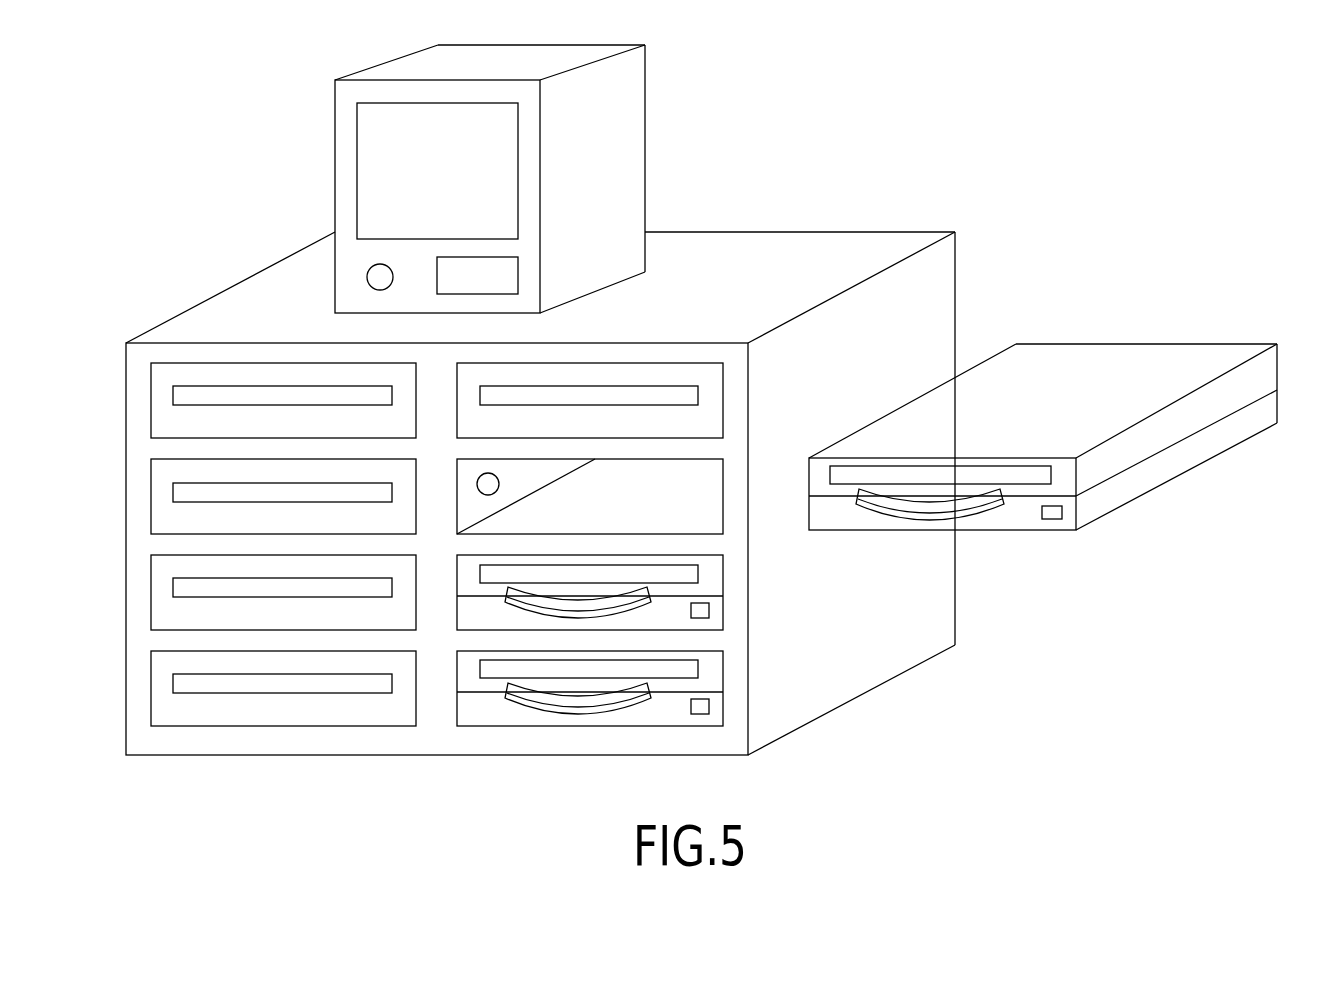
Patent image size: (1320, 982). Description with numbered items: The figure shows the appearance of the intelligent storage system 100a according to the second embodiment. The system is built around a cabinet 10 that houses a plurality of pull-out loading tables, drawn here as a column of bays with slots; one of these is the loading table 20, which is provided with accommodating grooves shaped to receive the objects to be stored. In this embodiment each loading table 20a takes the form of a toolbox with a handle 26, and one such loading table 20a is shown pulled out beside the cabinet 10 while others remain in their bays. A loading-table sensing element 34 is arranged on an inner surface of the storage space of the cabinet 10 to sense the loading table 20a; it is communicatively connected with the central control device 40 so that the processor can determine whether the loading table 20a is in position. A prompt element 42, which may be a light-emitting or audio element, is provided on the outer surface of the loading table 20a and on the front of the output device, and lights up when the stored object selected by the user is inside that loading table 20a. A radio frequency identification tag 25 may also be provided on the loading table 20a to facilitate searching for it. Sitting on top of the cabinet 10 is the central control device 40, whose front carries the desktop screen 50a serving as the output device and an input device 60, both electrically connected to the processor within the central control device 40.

The intelligent storage system 100a is at (850, 37).
The cabinet 10 is at (857, 247).
The loading table 20 is at (710, 381).
The loading table 20a is at (1130, 369).
The radio frequency identification (RFID) tag 25 is at (705, 618).
The handle 26 is at (924, 514).
The loading-table sensing element 34 is at (499, 484).
The central control device 40 is at (623, 138).
The prompt element 42 is at (677, 393).
The desktop screen 50a is at (370, 165).
The input device 60 is at (503, 277).